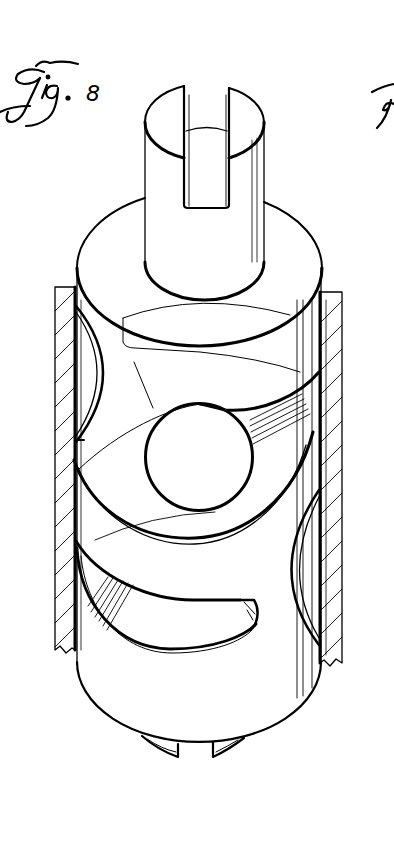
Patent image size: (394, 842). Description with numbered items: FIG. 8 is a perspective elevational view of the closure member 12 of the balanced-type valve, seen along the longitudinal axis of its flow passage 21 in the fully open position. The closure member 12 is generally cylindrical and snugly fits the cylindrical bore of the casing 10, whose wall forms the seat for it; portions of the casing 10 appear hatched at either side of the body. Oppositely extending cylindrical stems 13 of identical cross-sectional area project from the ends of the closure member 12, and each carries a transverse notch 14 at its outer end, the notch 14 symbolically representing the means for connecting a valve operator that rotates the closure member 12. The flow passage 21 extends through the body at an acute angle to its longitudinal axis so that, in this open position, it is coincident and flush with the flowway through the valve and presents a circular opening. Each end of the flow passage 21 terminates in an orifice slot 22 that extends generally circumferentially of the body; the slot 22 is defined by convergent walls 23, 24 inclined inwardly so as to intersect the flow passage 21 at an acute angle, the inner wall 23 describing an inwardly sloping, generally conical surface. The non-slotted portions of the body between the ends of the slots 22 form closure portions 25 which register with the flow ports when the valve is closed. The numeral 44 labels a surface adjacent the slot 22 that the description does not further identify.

The casing 10 is at (343, 314).
The closure member 12 is at (298, 215).
The stem 13 is at (267, 153).
The transverse notch 14 is at (226, 102).
The flow passage 21 is at (148, 452).
The orifice slot 22 is at (75, 550).
The inner wall 23 is at (157, 630).
The convergent wall 24 is at (184, 600).
The closure portion 25 is at (86, 353).
The cam surface 44 is at (300, 431).